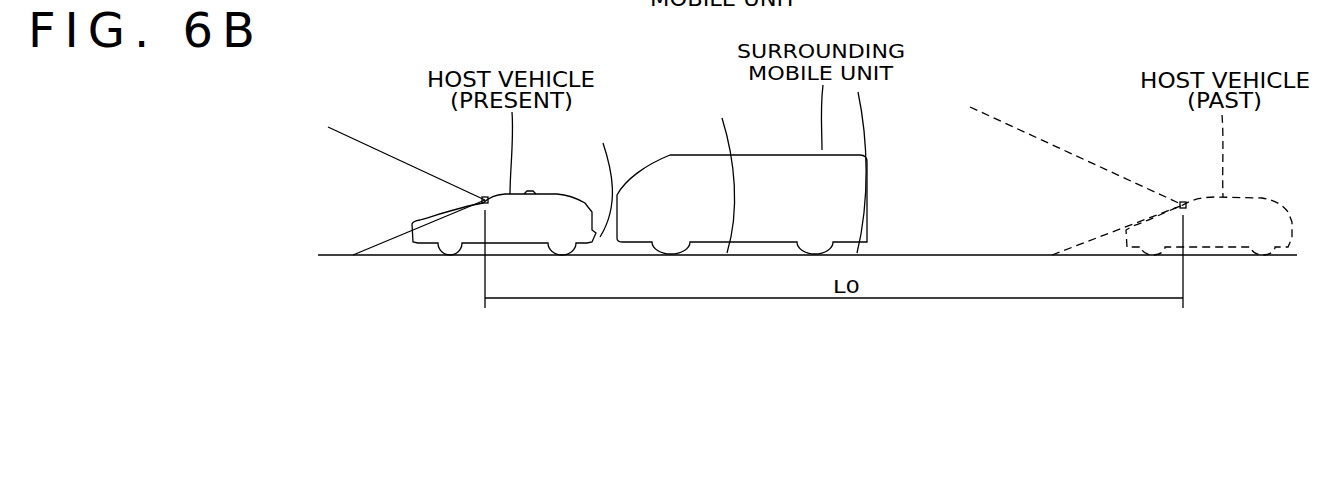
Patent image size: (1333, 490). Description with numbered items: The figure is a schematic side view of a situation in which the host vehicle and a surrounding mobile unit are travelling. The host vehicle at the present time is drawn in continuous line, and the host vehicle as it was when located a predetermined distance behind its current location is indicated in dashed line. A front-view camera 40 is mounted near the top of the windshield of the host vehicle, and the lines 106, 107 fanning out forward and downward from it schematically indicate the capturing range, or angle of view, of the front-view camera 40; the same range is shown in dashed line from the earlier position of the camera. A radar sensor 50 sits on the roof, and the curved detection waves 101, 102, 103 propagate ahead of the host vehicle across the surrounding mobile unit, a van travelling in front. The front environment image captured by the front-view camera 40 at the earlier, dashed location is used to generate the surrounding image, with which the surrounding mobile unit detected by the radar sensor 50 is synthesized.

The front-view camera 40 is at (483, 198).
The radar sensor 50 is at (530, 192).
The detection wave 101 is at (603, 143).
The detection wave 102 is at (732, 132).
The detection wave 103 is at (863, 110).
The capturing range boundary 106 is at (370, 256).
The capturing range boundary 107 is at (367, 145).